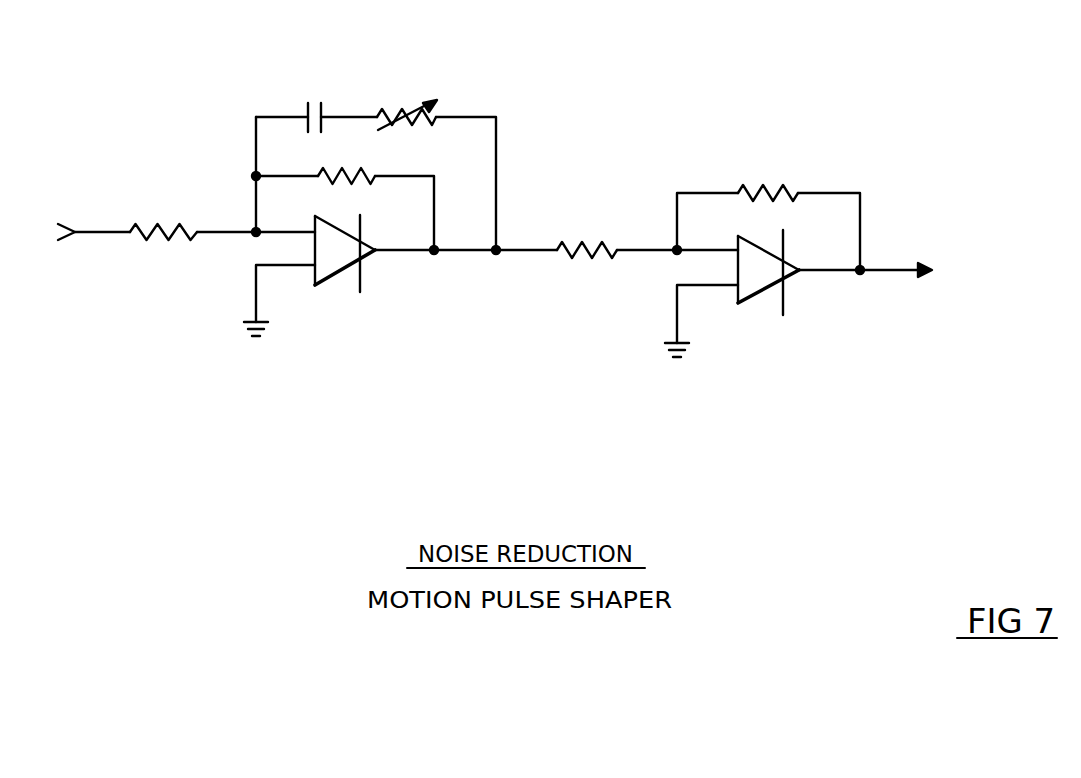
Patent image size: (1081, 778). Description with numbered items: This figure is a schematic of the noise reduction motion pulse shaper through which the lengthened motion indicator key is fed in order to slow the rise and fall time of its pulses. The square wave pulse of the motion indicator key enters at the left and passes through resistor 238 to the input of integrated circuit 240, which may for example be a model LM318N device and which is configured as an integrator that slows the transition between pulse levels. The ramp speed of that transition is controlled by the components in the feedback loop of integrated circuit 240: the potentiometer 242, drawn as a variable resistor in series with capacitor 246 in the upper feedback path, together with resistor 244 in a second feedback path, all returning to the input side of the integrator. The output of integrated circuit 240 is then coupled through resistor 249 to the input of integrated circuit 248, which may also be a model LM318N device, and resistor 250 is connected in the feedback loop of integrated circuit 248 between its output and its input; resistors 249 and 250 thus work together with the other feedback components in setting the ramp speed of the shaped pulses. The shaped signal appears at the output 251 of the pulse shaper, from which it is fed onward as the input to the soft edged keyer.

The resistor 238 is at (158, 226).
The integrated circuit 240 is at (315, 283).
The potentiometer 242 is at (402, 110).
The resistor 244 is at (362, 169).
The capacitor 246 is at (308, 103).
The integrated circuit 248 is at (737, 303).
The resistor 249 is at (583, 234).
The resistor 250 is at (768, 183).
The output 251 is at (897, 268).